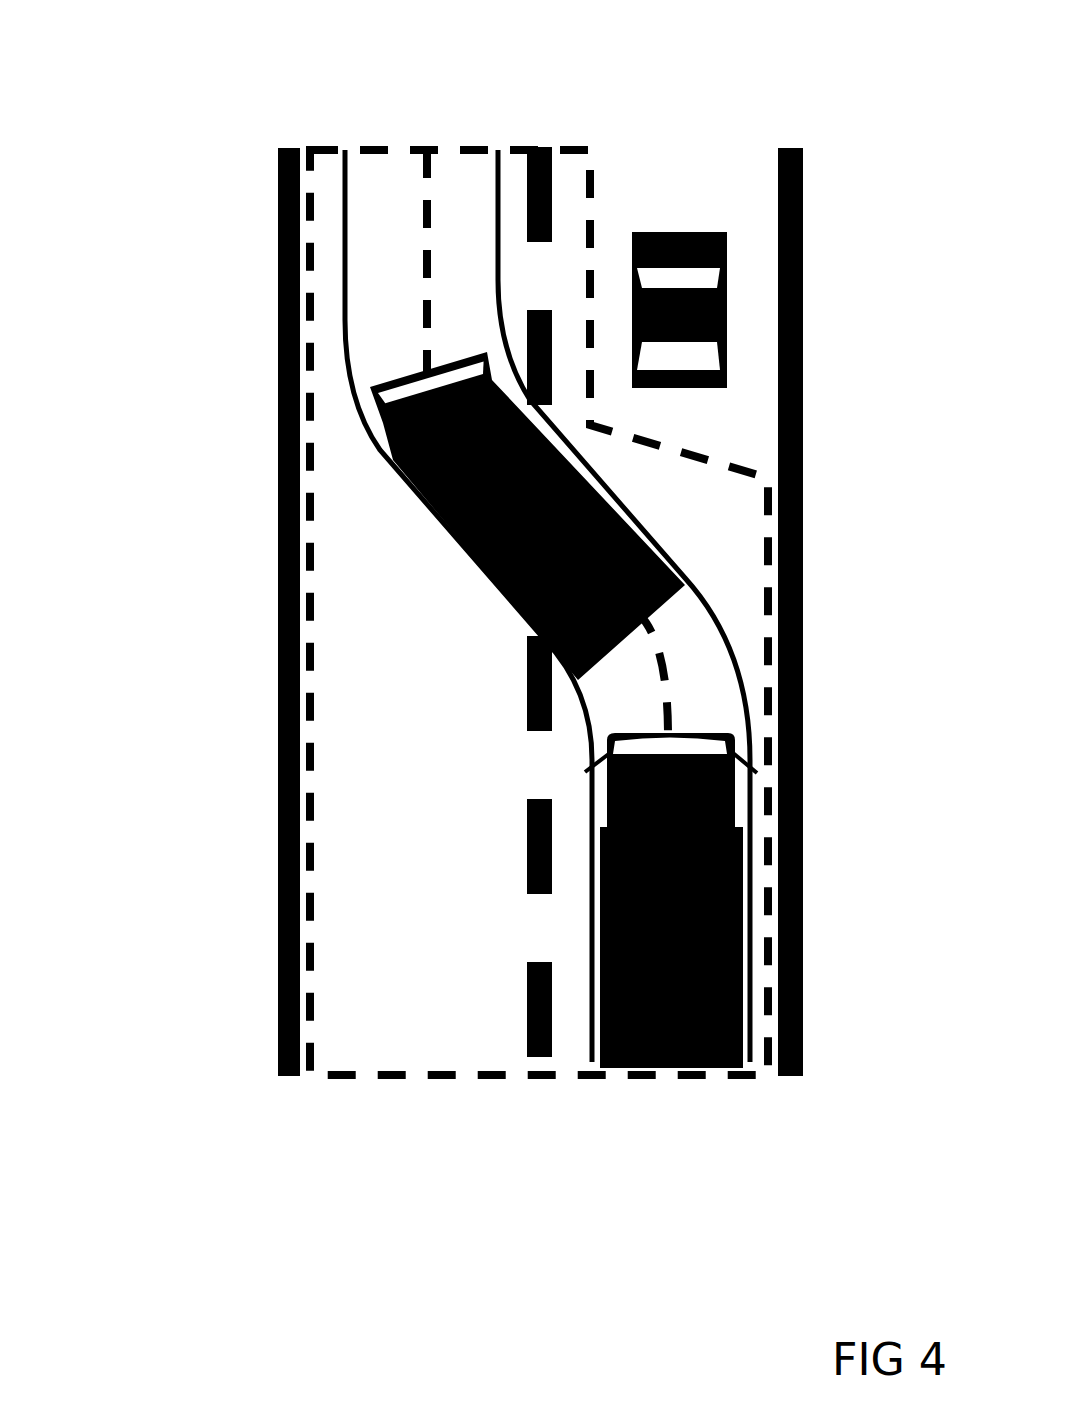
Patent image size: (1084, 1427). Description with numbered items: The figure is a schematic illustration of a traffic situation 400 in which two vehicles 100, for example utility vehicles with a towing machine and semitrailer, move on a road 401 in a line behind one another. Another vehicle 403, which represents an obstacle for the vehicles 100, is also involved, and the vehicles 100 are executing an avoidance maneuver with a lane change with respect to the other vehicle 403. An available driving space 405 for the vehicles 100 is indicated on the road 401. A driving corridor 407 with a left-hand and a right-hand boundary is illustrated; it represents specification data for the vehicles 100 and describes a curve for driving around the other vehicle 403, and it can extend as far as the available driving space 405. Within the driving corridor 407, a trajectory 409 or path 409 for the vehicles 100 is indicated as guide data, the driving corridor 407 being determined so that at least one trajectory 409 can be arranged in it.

The traffic situation 400 is at (165, 80).
The vehicle 100 is at (647, 620).
The road 401 is at (278, 258).
The other vehicle 403 is at (727, 310).
The available driving space 405 is at (397, 1075).
The driving corridor 407 is at (345, 345).
The trajectory 409 is at (420, 207).